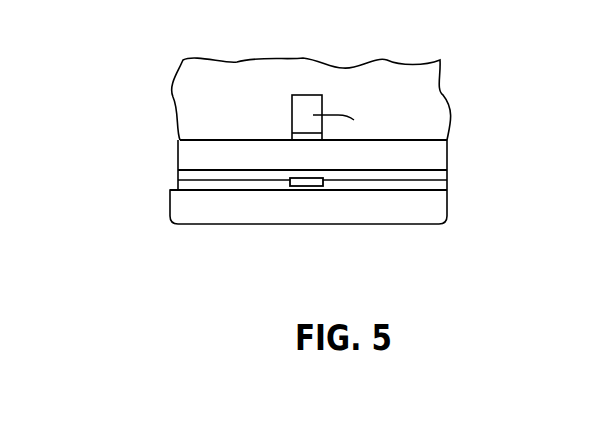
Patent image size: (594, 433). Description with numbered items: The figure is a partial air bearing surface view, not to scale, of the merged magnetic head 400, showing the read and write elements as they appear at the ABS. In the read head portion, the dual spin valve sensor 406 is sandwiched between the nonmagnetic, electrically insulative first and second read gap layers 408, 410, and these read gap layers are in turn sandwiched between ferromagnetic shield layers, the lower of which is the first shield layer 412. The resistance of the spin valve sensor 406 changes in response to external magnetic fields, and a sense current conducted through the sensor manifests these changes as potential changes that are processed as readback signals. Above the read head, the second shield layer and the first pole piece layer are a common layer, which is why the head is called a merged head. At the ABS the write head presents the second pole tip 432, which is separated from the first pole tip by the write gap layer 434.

The merged magnetic head 400 is at (302, 141).
The dual spin valve sensor 406 is at (307, 186).
The first read gap layer 408 is at (228, 190).
The second read gap layer 410 is at (412, 176).
The first shield layer 412 is at (434, 204).
The second pole tip 432 is at (306, 108).
The write gap layer 434 is at (307, 132).